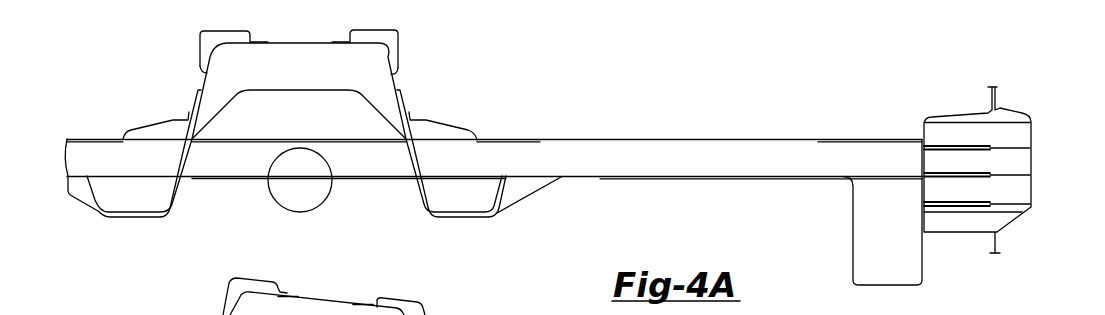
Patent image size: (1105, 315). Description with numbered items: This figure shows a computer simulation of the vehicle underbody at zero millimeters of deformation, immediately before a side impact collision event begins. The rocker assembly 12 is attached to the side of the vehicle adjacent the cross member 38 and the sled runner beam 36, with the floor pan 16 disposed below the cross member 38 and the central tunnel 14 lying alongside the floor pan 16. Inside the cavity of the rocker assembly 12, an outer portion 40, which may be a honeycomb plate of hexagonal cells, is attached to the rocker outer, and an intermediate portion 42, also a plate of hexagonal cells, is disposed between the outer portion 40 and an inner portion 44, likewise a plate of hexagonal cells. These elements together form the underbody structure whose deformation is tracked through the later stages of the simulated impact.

The rocker assembly 12 is at (1000, 181).
The central tunnel 14 is at (377, 78).
The floor pan 16 is at (494, 157).
The sled runner beam 36 is at (853, 232).
The cross member 38 is at (725, 155).
The outer portion 40 is at (1013, 122).
The intermediate portion 42 is at (973, 117).
The inner portion 44 is at (932, 207).